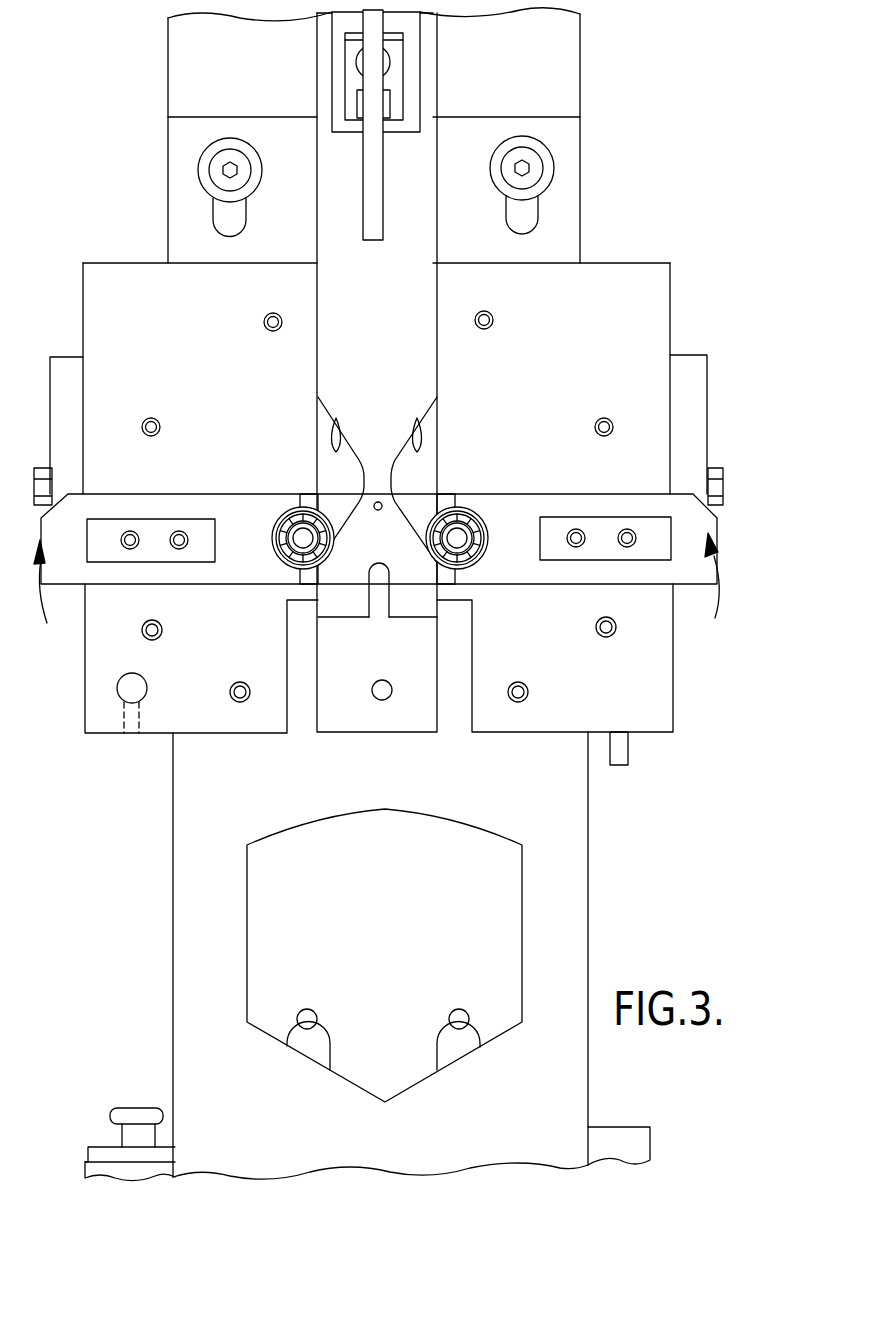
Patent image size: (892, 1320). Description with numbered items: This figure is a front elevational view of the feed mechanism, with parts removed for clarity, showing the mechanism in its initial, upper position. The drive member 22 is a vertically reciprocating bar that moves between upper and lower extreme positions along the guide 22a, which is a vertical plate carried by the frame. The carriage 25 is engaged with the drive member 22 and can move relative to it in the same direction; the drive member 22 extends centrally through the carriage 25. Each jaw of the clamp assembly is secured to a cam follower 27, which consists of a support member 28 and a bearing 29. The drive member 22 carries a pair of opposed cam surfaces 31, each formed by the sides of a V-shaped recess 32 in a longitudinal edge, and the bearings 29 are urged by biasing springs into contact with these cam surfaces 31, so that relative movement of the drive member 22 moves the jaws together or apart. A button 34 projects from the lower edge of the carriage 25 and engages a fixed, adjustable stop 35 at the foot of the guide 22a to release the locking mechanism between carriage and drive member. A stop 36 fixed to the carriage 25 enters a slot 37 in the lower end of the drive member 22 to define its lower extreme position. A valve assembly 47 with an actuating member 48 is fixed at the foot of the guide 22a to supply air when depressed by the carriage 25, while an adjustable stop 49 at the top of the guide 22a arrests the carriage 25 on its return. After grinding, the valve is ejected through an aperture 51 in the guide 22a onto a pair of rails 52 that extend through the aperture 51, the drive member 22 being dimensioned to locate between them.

The drive member 22 is at (446, 371).
The guide 22a is at (572, 900).
The carriage 25 is at (638, 327).
The cam follower 27 is at (381, 598).
The support member 28 is at (63, 568).
The bearing 29 is at (288, 513).
The cam surface 31 is at (337, 447).
The V-shaped recess 32 is at (333, 470).
The button 34 is at (618, 747).
The stop 35 is at (630, 1146).
The stop 36 is at (405, 672).
The slot 37 is at (375, 592).
The valve assembly 47 is at (107, 1172).
The actuating member 48 is at (138, 1117).
The adjustable stop 49 is at (567, 170).
The aperture 51 is at (365, 855).
The rails 52 is at (310, 1008).